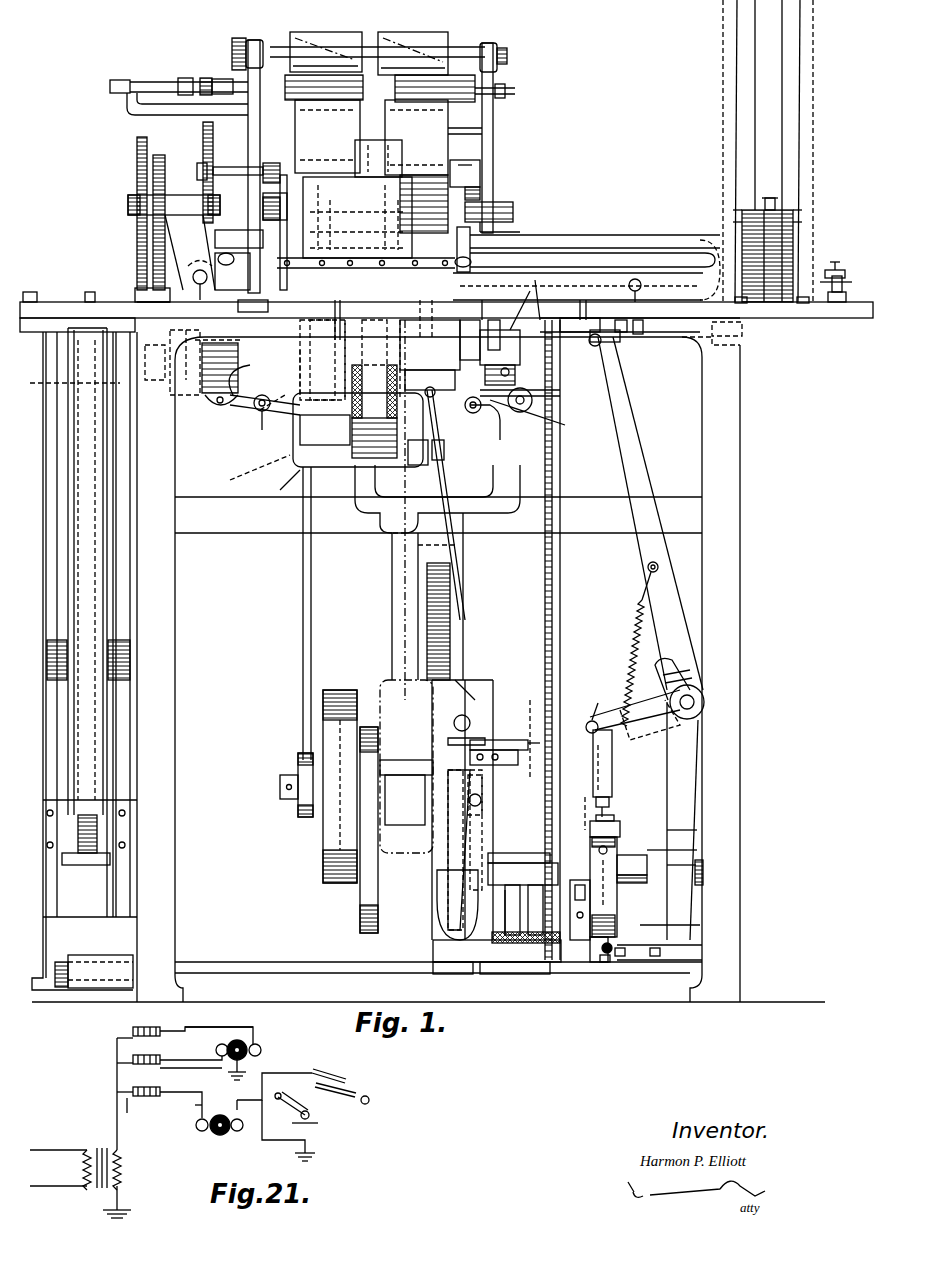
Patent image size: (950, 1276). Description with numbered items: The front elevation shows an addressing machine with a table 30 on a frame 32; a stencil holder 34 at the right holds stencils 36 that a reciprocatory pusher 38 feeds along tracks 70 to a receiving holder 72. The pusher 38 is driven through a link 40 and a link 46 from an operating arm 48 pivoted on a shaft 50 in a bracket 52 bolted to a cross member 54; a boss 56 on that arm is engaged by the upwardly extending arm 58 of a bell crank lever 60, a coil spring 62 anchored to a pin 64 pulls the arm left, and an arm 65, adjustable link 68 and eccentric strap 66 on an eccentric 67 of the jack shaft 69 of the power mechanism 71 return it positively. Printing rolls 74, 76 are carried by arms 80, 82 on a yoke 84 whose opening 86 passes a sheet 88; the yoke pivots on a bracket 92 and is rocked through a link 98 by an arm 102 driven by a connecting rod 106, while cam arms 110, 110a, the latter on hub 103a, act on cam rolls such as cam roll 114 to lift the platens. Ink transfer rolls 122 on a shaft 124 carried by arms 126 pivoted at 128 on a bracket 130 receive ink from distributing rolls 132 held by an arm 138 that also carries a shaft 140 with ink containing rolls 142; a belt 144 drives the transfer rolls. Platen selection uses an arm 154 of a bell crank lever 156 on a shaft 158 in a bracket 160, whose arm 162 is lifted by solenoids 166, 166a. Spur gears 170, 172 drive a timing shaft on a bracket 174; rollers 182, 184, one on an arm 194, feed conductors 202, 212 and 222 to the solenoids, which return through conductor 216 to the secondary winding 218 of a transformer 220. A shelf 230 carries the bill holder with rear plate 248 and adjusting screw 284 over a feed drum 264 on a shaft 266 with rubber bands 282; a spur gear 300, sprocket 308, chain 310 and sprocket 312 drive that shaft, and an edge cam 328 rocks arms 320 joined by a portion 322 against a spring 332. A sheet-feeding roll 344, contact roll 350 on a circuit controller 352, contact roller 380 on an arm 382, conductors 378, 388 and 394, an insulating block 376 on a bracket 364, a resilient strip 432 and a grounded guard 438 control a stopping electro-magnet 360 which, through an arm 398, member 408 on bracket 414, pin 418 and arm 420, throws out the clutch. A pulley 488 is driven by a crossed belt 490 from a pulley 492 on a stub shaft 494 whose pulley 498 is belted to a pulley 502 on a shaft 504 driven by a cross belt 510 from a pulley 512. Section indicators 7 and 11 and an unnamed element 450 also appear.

In FIG. 1, the table 30 is at (676, 340).
In FIG. 1, the frame 32 is at (742, 450).
In FIG. 1, the stencil holder 34 is at (806, 144).
In FIG. 1, the stencil 36 is at (795, 236).
In FIG. 1, the reciprocatory pusher 38 is at (838, 288).
In FIG. 1, the horizontal link 40 is at (660, 320).
In FIG. 1, the link 46 is at (582, 310).
In FIG. 1, the operating arm 48 is at (622, 408).
In FIG. 1, the horizontal shaft 50 is at (690, 700).
In FIG. 1, the bracket 52 is at (683, 790).
In FIG. 1, the horizontal cross member 54 is at (663, 1003).
In FIG. 1, the forwardly projecting boss 56 is at (690, 648).
In FIG. 1, the upwardly extending arm 58 is at (695, 672).
In FIG. 1, the bell crank lever 60 is at (625, 698).
In FIG. 1, the coil spring 62 is at (617, 646).
In FIG. 1, the pin 64 is at (647, 565).
In FIG. 1, the arm 65 is at (658, 728).
In FIG. 1, the eccentric strap 66 is at (605, 858).
In FIG. 1, the eccentric 67 is at (617, 910).
In FIG. 1, the adjustable link 68 is at (612, 776).
In FIG. 1, the jack shaft 69 is at (705, 866).
In FIG. 1, the horizontal tracks 70 is at (700, 245).
In FIG. 1, the power mechanism 71 is at (458, 658).
In FIG. 1, the stencil receiving holder 72 is at (120, 571).
In FIG. 1, the printing roll 74 is at (395, 217).
In FIG. 1, the printing roll 76 is at (357, 217).
In FIG. 1, the forwardly extending arm 80 is at (470, 240).
In FIG. 1, the forwardly extending arm 82 is at (251, 241).
In FIG. 1, the yoke 84 is at (612, 235).
In FIG. 1, the elongated horizontal opening 86 is at (565, 260).
In FIG. 1, the sheet 88 is at (430, 215).
In FIG. 1, the bracket 92 is at (493, 429).
In FIG. 1, the link 98 is at (440, 458).
In FIG. 1, the arm 102 is at (405, 498).
In FIG. 1, the connecting rod 106 is at (440, 568).
In FIG. 1, the cam arm 110 is at (445, 428).
In FIG. 1, the cam arm 110a is at (270, 465).
In FIG. 1, the hub 103a is at (300, 468).
In FIG. 1, the cam roll 114 is at (318, 300).
In FIG. 1, the ink transfer rolls 122 is at (371, 166).
In FIG. 1, the shaft 124 is at (230, 167).
In FIG. 1, the arms 126 is at (263, 174).
In FIG. 1, the pivot 128 is at (513, 210).
In FIG. 1, the upstanding bracket 130 is at (500, 232).
In FIG. 1, the ink distributing rolls 132 is at (330, 80).
In FIG. 1, the arm 138 is at (493, 128).
In FIG. 1, the shaft 140 is at (286, 47).
In FIG. 1, the ink containing rolls 142 is at (335, 32).
In FIG. 1, the belt 144 is at (203, 133).
In FIG. 1, the arm 154 is at (191, 371).
In FIG. 1, the bell crank lever 156 is at (500, 405).
In FIG. 1, the shaft 158 is at (262, 418).
In FIG. 1, the depending bracket member 160 is at (290, 425).
In FIG. 1, the horizontal arm 162 is at (500, 395).
In FIG. 1, the magnet coil 166 is at (532, 400).
In FIG. 21, the magnet coil 166 is at (133, 1027).
In FIG. 1, the platen-controlling solenoid 166a is at (202, 380).
In FIG. 21, the platen-controlling solenoid 166a is at (133, 1056).
In FIG. 1, the spur gear 170 is at (600, 830).
In FIG. 1, the spur gear 172 is at (548, 878).
In FIG. 1, the vertically extending bracket 174 is at (455, 918).
In FIG. 21, the metal roller 182 is at (262, 1055).
In FIG. 1, the metal roller 184 is at (470, 883).
In FIG. 21, the metal roller 184 is at (216, 1050).
In FIG. 1, the arm 194 is at (505, 903).
In FIG. 21, the conductor 202 is at (257, 1044).
In FIG. 21, the conductor 212 is at (222, 1027).
In FIG. 21, the conductor 216 is at (117, 1086).
In FIG. 21, the secondary winding 218 is at (122, 1166).
In FIG. 21, the transformer 220 is at (92, 1190).
In FIG. 21, the conductor 222 is at (208, 1068).
In FIG. 1, the horizontal shelf 230 is at (612, 300).
In FIG. 1, the upstanding rear plate 248 is at (362, 172).
In FIG. 1, the sheet feeding drum 264 is at (360, 467).
In FIG. 1, the shaft 266 is at (272, 412).
In FIG. 1, the corrugated rubber bands 282 is at (358, 440).
In FIG. 1, the adjusting screw 284 is at (470, 128).
In FIG. 1, the spur gear 300 is at (530, 302).
In FIG. 1, the sprocket wheel 308 is at (560, 343).
In FIG. 1, the chain 310 is at (545, 572).
In FIG. 1, the sprocket 312 is at (520, 968).
In FIG. 1, the vertical arms 320 is at (245, 406).
In FIG. 1, the horizontal portion 322 is at (303, 498).
In FIG. 1, the edge cam 328 is at (463, 405).
In FIG. 1, the tension coil spring 332 is at (420, 318).
In FIG. 21, the sheet-feeding roll 344 is at (312, 1118).
In FIG. 21, the circuit-controlling contact roll 350 is at (238, 1131).
In FIG. 21, the circuit-controller 352 is at (221, 1136).
In FIG. 21, the machine-stopping electro-magnet 360 is at (133, 1090).
In FIG. 1, the bracket 364 is at (594, 962).
In FIG. 1, the insulating block 376 is at (610, 955).
In FIG. 21, the conductor 378 is at (266, 1117).
In FIG. 21, the contact roller 380 is at (200, 1131).
In FIG. 1, the arm 382 is at (672, 937).
In FIG. 21, the electrical conductor 388 is at (202, 1112).
In FIG. 21, the conductor 394 is at (135, 1115).
In FIG. 1, the vertically extending arm 398 is at (495, 838).
In FIG. 1, the member 408 is at (490, 698).
In FIG. 1, the bracket 414 is at (460, 713).
In FIG. 1, the pin 418 is at (490, 740).
In FIG. 1, the arm 420 is at (452, 736).
In FIG. 21, the resilient metal strip 432 is at (340, 1096).
In FIG. 21, the wire band guard 438 is at (338, 1071).
In FIG. 1, the column 450 is at (463, 595).
In FIG. 1, the pulley 488 is at (135, 290).
In FIG. 1, the crossed belt 490 is at (138, 276).
In FIG. 1, the pulley 492 is at (137, 162).
In FIG. 1, the stub shaft 494 is at (128, 202).
In FIG. 1, the pulley 498 is at (153, 222).
In FIG. 1, the pulley 502 is at (66, 383).
In FIG. 1, the horizontal shaft 504 is at (205, 362).
In FIG. 1, the cross belt 510 is at (303, 620).
In FIG. 1, the pulley 512 is at (298, 760).
In FIG. 1, the section line 7 is at (579, 799).
In FIG. 1, the section line 11 is at (521, 701).